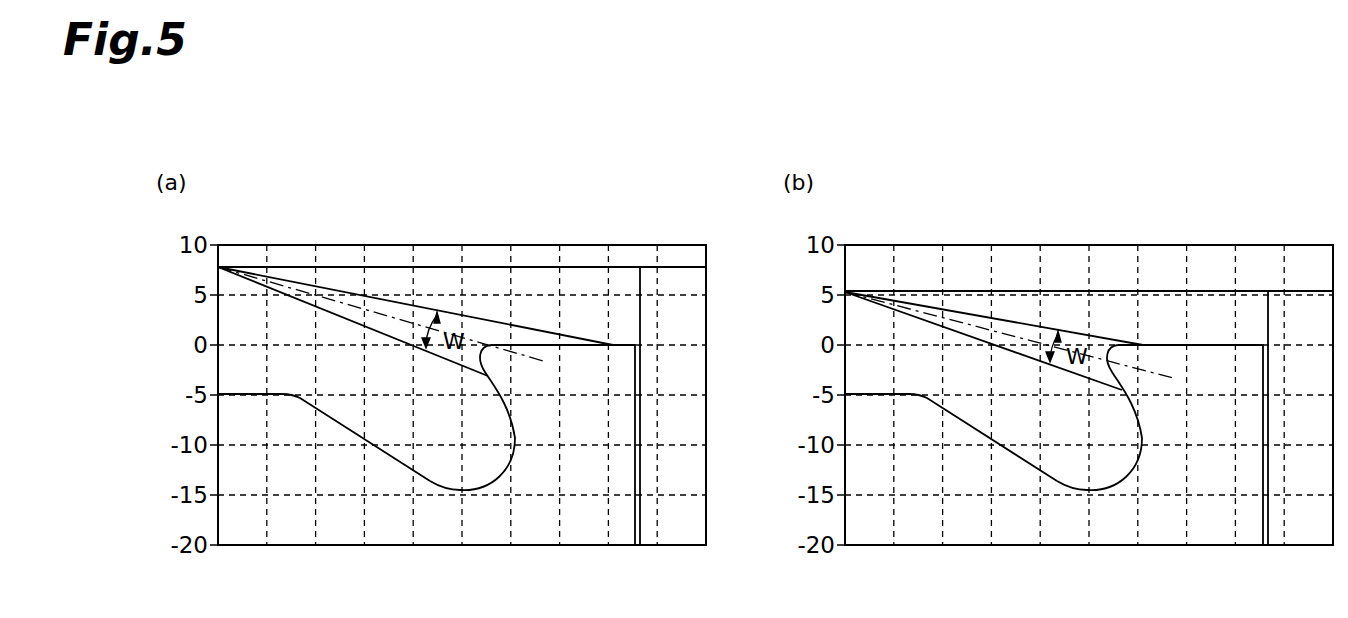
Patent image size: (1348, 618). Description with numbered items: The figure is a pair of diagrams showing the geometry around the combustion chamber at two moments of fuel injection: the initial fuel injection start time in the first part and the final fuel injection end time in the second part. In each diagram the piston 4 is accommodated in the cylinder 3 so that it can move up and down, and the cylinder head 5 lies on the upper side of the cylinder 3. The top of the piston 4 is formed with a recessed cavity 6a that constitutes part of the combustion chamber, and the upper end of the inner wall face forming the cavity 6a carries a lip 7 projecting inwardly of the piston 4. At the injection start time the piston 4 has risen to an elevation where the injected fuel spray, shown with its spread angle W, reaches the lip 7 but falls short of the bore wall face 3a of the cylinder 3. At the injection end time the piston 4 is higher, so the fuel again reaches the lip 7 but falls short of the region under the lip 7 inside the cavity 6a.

The cylinder 3 is at (655, 414).
The bore wall face 3a is at (638, 306).
The piston 4 is at (250, 407).
The cylinder head 5 is at (447, 257).
The cavity 6a is at (352, 386).
The lip 7 is at (500, 368).